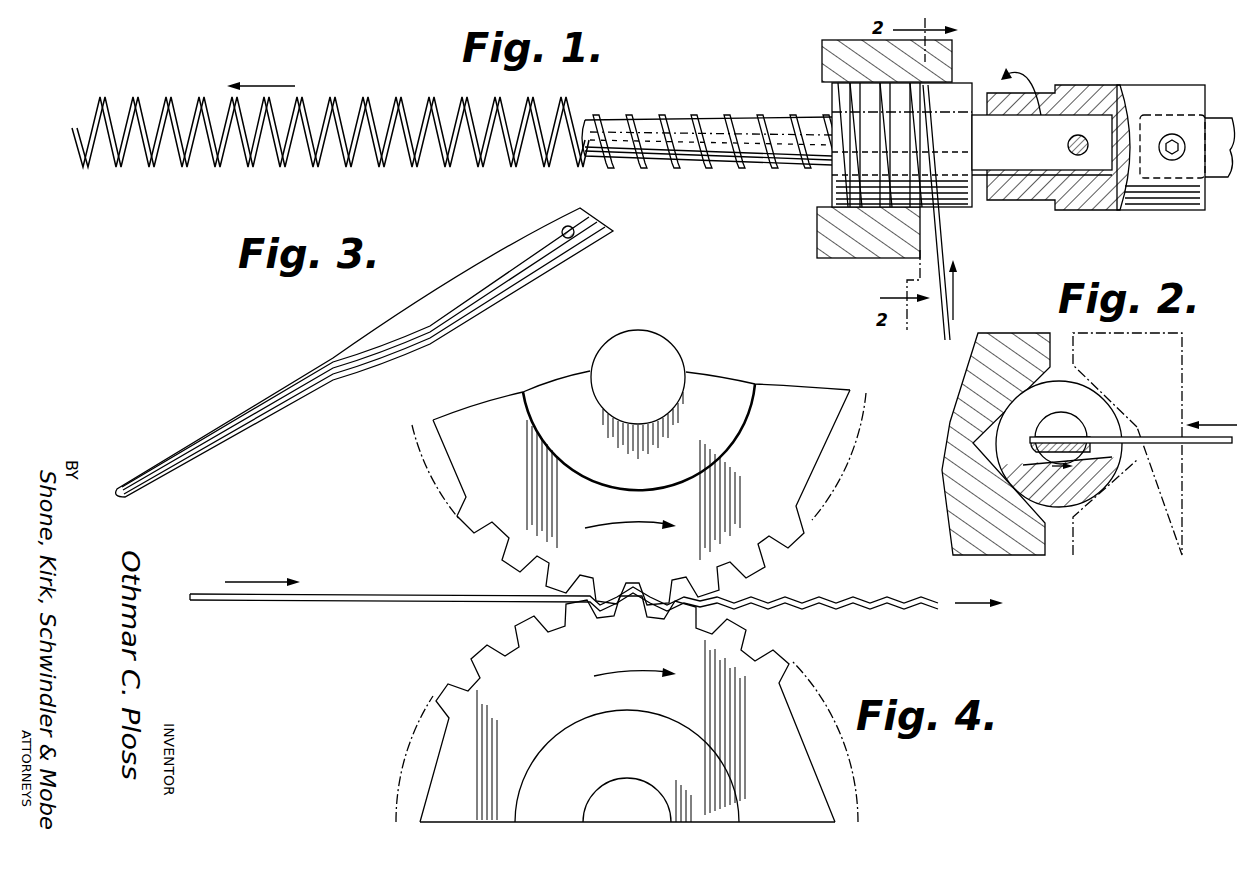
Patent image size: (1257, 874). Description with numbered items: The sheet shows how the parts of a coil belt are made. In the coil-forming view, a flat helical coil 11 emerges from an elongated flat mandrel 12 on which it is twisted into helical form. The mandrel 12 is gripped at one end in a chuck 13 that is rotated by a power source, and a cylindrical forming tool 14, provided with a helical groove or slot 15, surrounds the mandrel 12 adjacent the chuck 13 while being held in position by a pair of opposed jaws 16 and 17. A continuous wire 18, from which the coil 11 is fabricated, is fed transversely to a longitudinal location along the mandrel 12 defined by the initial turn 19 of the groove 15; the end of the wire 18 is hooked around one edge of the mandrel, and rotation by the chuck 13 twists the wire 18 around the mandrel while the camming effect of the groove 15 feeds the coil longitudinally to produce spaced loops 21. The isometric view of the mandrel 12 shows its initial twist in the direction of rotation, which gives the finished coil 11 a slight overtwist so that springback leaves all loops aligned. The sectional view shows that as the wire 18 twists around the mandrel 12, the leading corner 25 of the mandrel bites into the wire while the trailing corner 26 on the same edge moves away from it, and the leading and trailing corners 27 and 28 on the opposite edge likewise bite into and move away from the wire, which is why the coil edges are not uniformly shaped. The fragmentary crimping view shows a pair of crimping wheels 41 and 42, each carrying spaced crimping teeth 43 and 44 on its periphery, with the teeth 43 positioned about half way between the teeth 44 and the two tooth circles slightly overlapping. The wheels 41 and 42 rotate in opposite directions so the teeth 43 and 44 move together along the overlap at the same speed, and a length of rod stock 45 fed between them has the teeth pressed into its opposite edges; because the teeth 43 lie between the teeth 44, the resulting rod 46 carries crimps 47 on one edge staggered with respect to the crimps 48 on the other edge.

In FIG. 1, the flat helical coil 11 is at (132, 92).
In FIG. 1, the elongated flat mandrel 12 is at (740, 120).
In FIG. 3, the elongated flat mandrel 12 is at (510, 263).
In FIG. 1, the chuck 13 is at (1162, 92).
In FIG. 1, the cylindrical forming tool 14 is at (962, 85).
In FIG. 1, the helical groove 15 is at (835, 194).
In FIG. 1, the jaw 16 is at (835, 51).
In FIG. 2, the jaw 16 is at (977, 364).
In FIG. 1, the jaw 17 is at (822, 243).
In FIG. 2, the jaw 17 is at (1153, 547).
In FIG. 1, the continuous wire 18 is at (940, 243).
In FIG. 1, the initial turn 19 is at (933, 143).
In FIG. 1, the spaced loops 21 is at (430, 100).
In FIG. 2, the leading corner 25 is at (1032, 453).
In FIG. 2, the trailing corner 26 is at (1017, 424).
In FIG. 2, the leading corner 27 is at (1100, 437).
In FIG. 2, the trailing corner 28 is at (1090, 460).
In FIG. 4, the crimping wheel 41 is at (482, 417).
In FIG. 4, the crimping wheel 42 is at (443, 755).
In FIG. 4, the crimping teeth 43 is at (513, 556).
In FIG. 4, the crimping teeth 44 is at (452, 688).
In FIG. 4, the rod stock 45 is at (386, 596).
In FIG. 4, the resulting rod 46 is at (860, 597).
In FIG. 4, the crimps 47 is at (768, 599).
In FIG. 4, the crimps 48 is at (840, 605).